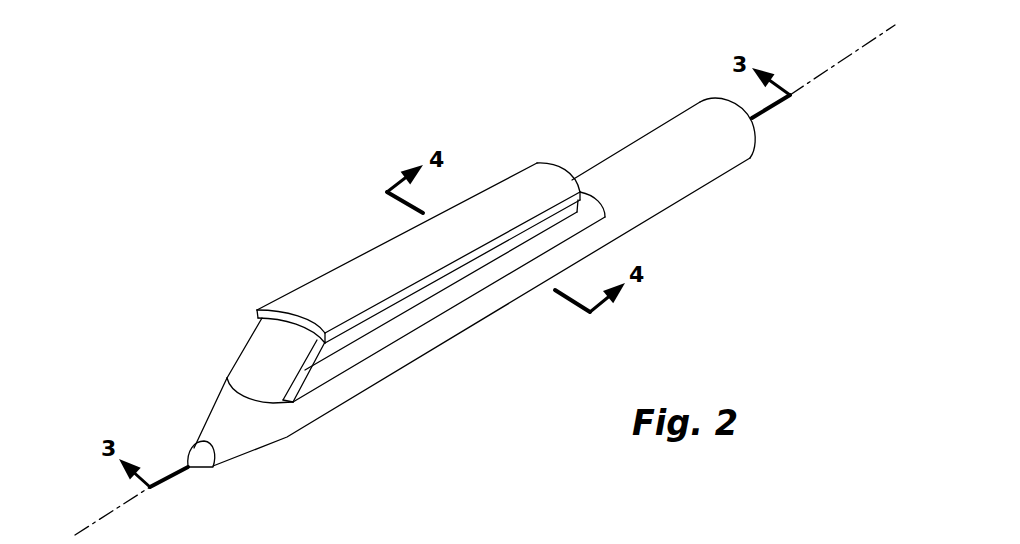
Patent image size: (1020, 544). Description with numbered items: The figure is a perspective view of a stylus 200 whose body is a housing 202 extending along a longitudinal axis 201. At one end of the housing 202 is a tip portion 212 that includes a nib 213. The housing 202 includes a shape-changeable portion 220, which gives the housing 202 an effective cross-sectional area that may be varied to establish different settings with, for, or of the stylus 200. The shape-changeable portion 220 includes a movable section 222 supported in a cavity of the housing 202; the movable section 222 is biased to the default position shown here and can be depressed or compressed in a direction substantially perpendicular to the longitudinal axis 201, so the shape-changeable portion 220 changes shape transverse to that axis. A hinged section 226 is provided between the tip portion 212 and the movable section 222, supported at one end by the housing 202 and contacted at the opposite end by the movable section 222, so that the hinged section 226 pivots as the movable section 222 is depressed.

The stylus 200 is at (485, 274).
The longitudinal axis 201 is at (872, 38).
The housing 202 is at (500, 144).
The tip portion 212 is at (200, 401).
The nib 213 is at (200, 453).
The shape-changeable portion 220 is at (418, 253).
The movable section 222 is at (362, 268).
The hinged section 226 is at (278, 353).